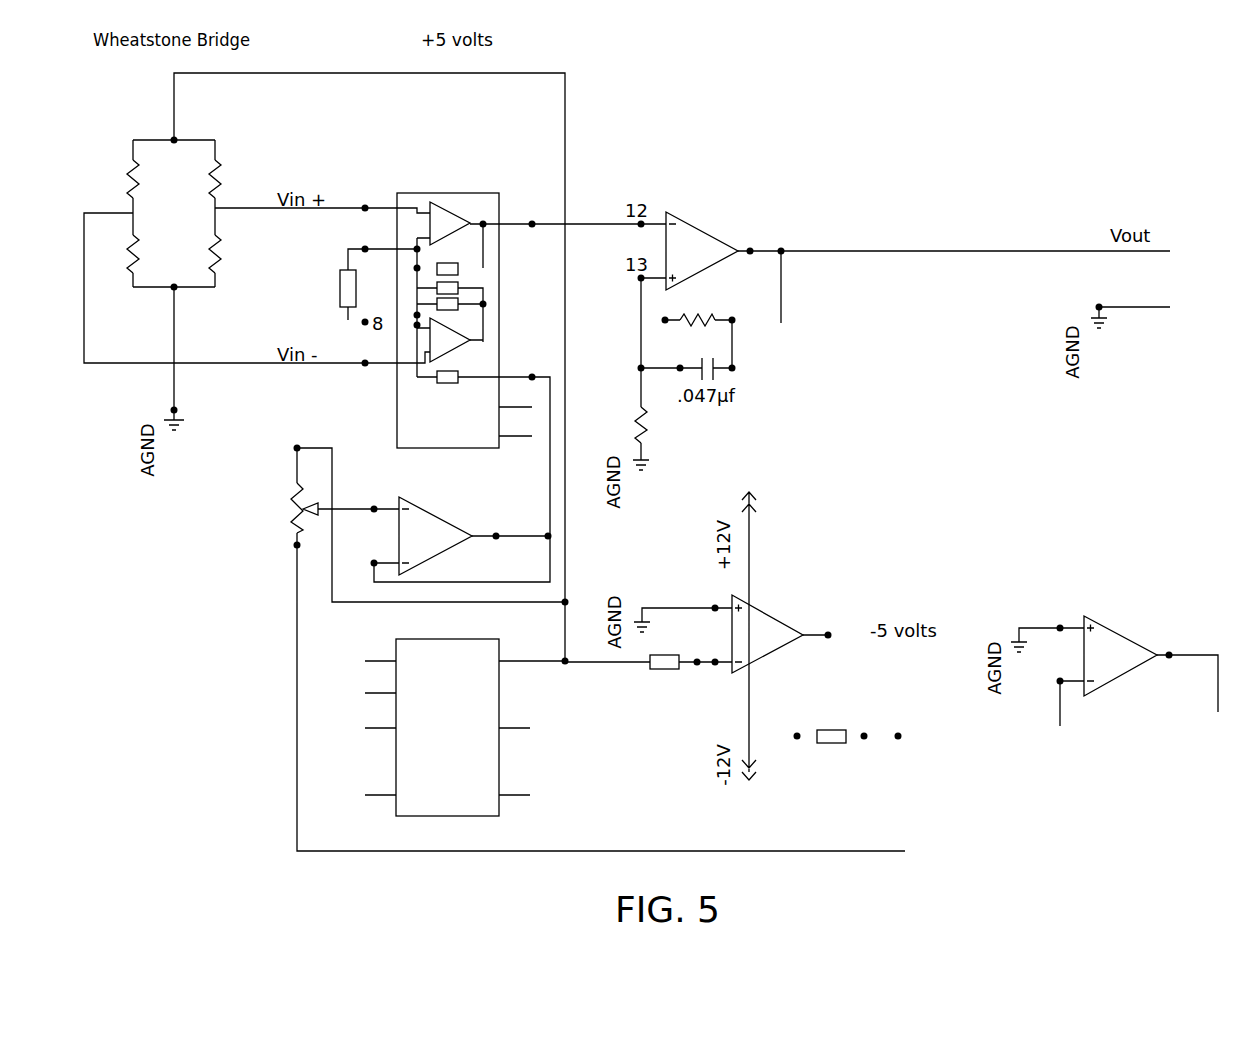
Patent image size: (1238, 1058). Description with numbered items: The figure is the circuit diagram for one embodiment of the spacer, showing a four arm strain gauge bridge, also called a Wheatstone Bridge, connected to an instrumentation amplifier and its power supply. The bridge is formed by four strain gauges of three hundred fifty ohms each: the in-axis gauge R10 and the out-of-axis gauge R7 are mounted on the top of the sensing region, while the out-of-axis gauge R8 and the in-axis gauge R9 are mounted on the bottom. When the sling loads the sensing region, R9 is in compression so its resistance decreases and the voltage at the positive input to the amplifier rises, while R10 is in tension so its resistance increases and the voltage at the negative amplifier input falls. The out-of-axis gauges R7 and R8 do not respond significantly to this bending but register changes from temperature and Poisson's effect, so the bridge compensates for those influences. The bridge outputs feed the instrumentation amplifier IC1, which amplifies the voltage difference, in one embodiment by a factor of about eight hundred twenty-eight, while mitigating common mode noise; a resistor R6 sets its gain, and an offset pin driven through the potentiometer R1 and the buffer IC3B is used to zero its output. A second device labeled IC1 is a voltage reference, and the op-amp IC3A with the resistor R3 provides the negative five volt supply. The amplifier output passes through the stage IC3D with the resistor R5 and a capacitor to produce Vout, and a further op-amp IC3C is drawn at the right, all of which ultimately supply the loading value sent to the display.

The in-axis strain gauge R10 is at (131, 176).
The in-axis strain gauge R9 is at (216, 176).
The out-of-axis strain gauge R7 is at (131, 254).
The out-of-axis strain gauge R8 is at (216, 254).
The 2.6k resistor R6 is at (496, 349).
The 100k resistor R5 is at (699, 325).
The 1k resistor R3 is at (848, 741).
The 10k potentiometer R1 is at (323, 508).
The INA122P instrumentation amplifier / REF02 voltage reference IC1 is at (465, 507).
The TL084 op-amp section A IC3A is at (780, 638).
The TL084 op-amp section B IC3B is at (455, 535).
The TL084 op-amp section C IC3C is at (1137, 650).
The TL084 op-amp section D IC3D is at (718, 246).